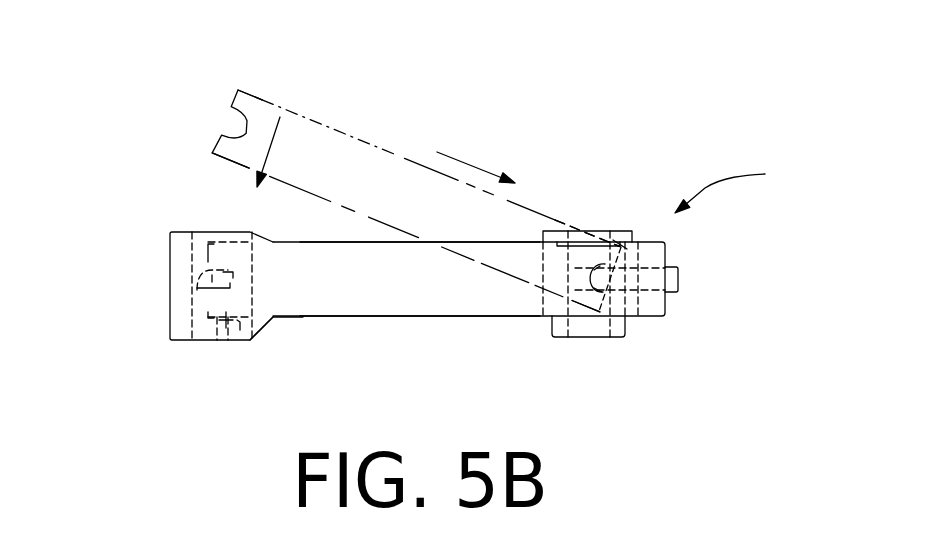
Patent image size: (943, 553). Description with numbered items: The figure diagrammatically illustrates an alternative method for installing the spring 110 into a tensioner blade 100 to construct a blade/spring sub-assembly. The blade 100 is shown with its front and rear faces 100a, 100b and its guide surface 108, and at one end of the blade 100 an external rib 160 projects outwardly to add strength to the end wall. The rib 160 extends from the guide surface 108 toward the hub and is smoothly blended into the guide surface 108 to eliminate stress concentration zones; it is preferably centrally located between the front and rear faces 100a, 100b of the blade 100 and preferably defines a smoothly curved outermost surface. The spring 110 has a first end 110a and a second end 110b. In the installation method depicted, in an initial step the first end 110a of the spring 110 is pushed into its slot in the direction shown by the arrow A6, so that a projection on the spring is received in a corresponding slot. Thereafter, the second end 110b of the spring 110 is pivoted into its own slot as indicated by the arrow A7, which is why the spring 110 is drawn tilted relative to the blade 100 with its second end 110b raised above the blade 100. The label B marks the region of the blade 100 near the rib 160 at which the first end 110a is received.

The blade 100 is at (170, 288).
The front face 100a is at (303, 317).
The rear face 100b is at (332, 241).
The guide surface 108 is at (412, 287).
The spring 110 is at (375, 143).
The first end 110a is at (553, 214).
The second end 110b is at (262, 99).
The external rib 160 is at (680, 279).
The arrow A6 is at (469, 159).
The arrow A7 is at (232, 117).
The direction arrow B is at (730, 187).